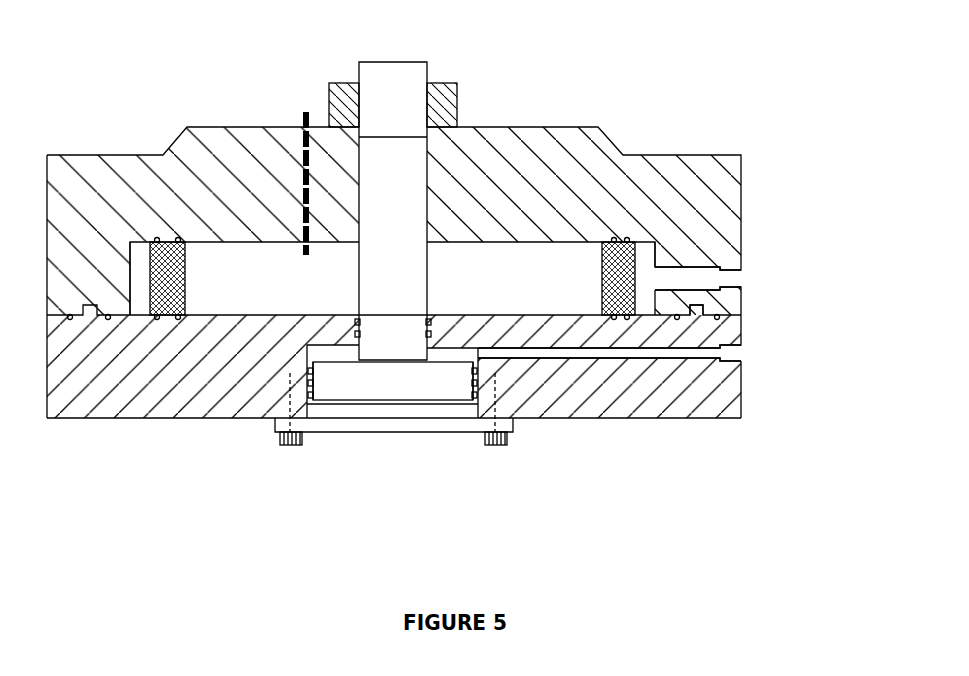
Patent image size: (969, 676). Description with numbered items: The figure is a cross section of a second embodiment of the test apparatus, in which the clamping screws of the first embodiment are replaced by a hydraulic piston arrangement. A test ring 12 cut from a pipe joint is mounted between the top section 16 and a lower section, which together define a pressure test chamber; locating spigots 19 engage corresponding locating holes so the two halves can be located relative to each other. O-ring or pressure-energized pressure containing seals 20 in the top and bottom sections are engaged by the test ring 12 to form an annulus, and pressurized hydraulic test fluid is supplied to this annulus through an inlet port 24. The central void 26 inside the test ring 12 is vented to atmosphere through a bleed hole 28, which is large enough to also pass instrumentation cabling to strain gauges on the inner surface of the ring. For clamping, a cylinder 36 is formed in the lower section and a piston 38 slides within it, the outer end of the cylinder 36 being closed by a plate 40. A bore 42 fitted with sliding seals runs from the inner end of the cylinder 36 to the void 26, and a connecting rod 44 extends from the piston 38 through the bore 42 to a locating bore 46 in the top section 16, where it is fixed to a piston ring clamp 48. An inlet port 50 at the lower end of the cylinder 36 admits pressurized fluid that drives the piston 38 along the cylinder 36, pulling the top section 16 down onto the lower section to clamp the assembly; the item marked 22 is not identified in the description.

The top section 16 is at (107, 170).
The test ring 12 is at (612, 248).
The central void 26 is at (520, 285).
The seal 22 is at (625, 245).
The pressure containing seals 20 is at (625, 318).
The locating spigots 19 is at (700, 305).
The inlet port 24 is at (764, 276).
The inlet port 50 is at (764, 354).
The locating bore 46 is at (427, 165).
The piston ring clamp 48 is at (453, 82).
The bleed hole 28 is at (305, 130).
The bore 42 is at (355, 325).
The cylinder 36 is at (310, 400).
The piston 38 is at (455, 385).
The connecting rod 44 is at (410, 345).
The plate 40 is at (348, 423).